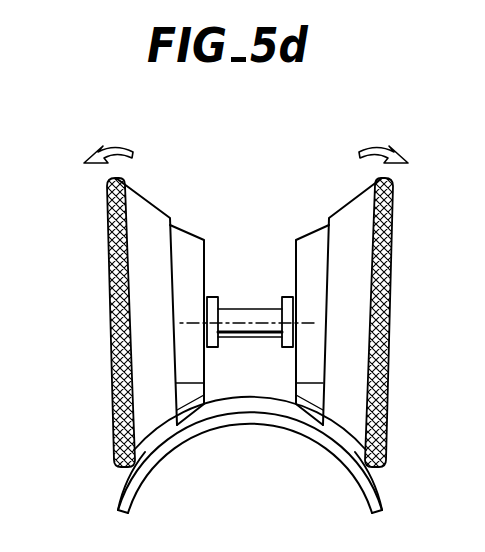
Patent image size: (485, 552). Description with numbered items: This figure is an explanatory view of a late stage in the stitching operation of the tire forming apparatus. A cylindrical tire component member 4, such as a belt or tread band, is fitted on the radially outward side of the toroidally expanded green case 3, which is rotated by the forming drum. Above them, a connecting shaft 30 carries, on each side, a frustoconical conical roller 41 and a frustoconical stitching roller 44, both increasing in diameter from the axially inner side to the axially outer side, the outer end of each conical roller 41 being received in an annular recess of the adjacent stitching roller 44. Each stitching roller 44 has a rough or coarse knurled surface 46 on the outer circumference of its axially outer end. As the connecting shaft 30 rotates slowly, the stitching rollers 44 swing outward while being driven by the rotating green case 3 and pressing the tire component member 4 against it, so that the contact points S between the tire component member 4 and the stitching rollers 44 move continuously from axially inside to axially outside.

The green case 3 is at (255, 413).
The tire component member 4 is at (250, 398).
The connecting shaft 30 is at (256, 317).
The conical roller 41 is at (304, 249).
The stitching roller 44 is at (148, 209).
The rough or coarse surface 46 is at (108, 268).
The contact points S is at (144, 451).